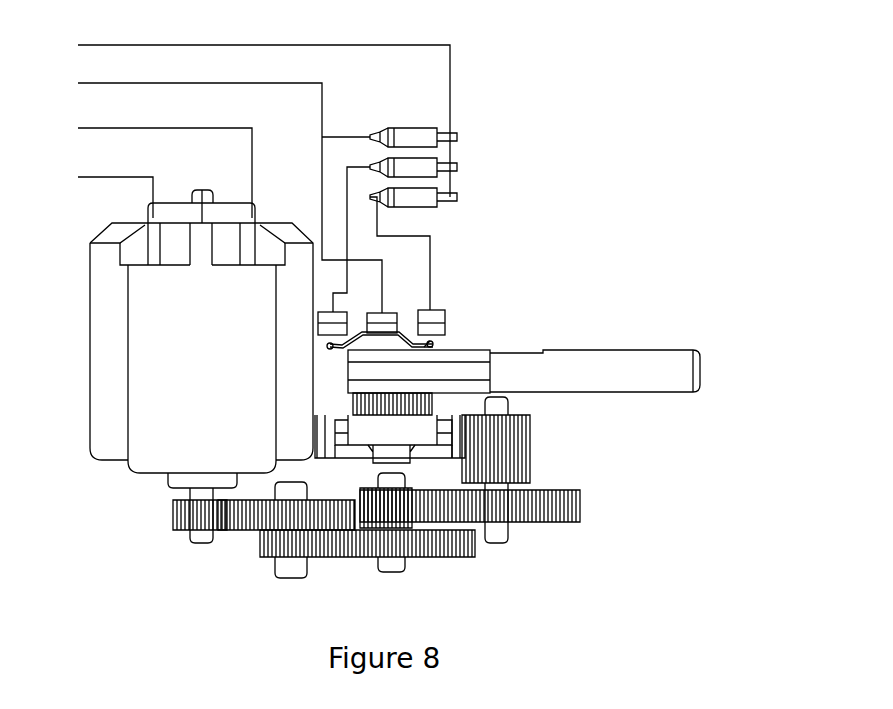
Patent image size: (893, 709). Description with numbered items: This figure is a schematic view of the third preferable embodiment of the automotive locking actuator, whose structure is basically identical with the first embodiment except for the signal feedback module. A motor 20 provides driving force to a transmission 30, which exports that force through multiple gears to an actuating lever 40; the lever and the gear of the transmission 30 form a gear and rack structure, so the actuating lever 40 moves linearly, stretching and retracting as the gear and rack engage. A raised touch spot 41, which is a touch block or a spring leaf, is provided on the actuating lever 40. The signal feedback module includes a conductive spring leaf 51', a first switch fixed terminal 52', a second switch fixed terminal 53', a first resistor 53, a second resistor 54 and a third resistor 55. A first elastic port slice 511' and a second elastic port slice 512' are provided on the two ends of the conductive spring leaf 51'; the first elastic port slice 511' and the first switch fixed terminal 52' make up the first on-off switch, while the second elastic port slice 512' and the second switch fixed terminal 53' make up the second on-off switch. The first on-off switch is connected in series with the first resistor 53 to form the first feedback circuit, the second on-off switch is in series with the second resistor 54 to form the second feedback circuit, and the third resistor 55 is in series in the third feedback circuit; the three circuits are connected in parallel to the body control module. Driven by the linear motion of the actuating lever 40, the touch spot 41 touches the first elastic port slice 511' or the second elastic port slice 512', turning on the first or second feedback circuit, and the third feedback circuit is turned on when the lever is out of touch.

The motor 20 is at (165, 455).
The transmission 30 is at (362, 542).
The actuating lever 40 is at (643, 370).
The raised touch spot 41 is at (385, 349).
The conductive spring leaf 51' is at (395, 308).
The first switch fixed terminal 52' is at (312, 309).
The second switch fixed terminal 53' is at (465, 309).
The first elastic port slice 511' is at (356, 368).
The second elastic port slice 512' is at (468, 335).
The first resistor 53 is at (447, 192).
The second resistor 54 is at (425, 175).
The third resistor 55 is at (425, 145).